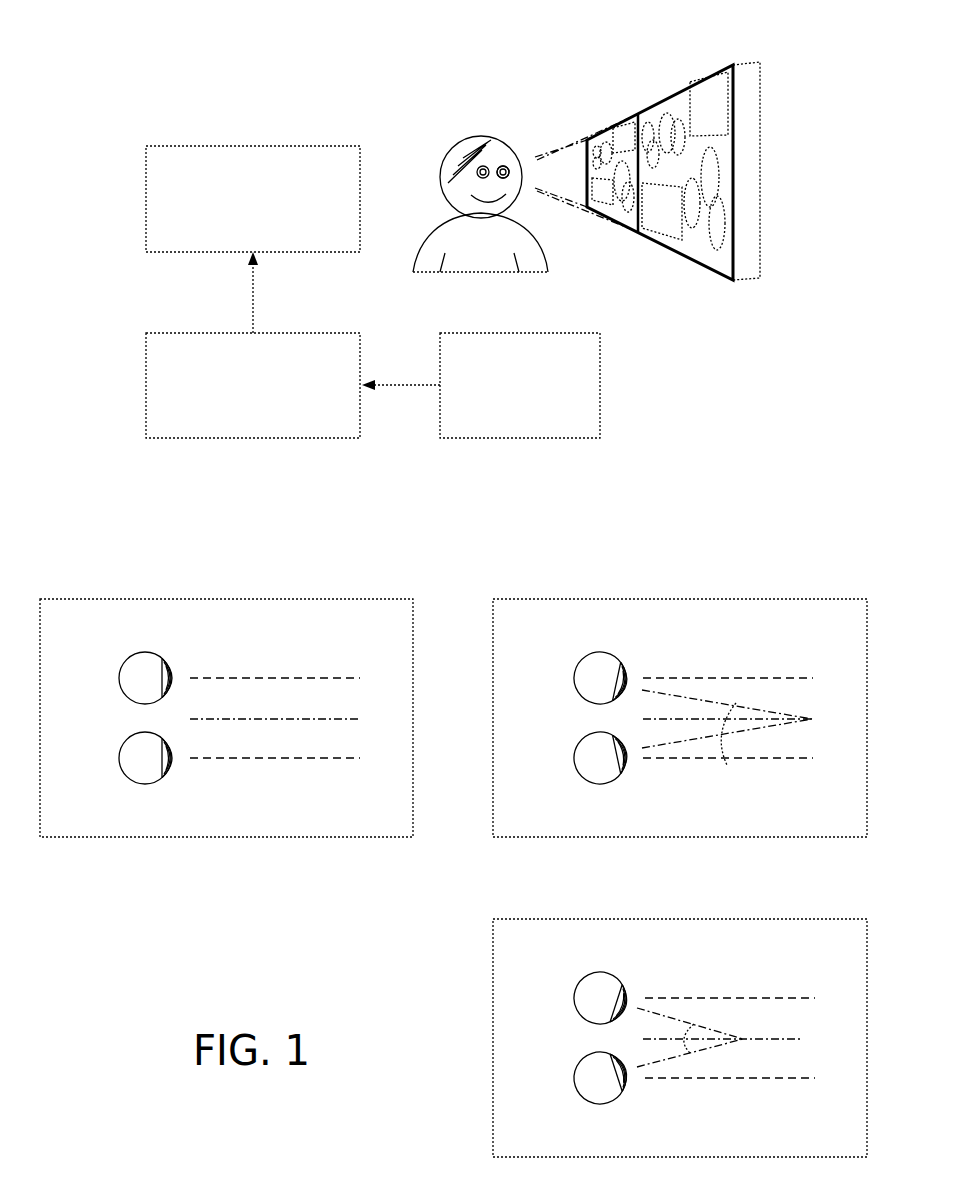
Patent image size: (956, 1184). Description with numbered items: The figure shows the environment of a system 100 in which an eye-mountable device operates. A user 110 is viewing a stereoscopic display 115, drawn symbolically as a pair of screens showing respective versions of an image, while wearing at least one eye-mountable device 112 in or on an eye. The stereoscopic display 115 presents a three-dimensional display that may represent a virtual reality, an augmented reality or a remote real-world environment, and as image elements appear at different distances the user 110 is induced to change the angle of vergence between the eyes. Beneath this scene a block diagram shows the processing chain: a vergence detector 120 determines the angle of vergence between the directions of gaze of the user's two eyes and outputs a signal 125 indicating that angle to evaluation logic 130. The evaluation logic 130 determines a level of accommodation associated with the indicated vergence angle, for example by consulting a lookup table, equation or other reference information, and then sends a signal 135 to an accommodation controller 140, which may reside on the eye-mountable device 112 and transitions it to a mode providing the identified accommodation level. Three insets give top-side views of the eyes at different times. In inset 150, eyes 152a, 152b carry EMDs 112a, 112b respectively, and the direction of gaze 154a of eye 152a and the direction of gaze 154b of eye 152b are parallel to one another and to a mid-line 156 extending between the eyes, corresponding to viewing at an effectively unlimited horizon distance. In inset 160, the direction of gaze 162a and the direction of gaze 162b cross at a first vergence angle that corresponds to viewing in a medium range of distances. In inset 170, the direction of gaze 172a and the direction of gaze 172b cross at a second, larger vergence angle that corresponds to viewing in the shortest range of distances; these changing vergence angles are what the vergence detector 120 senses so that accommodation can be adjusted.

The system 100 is at (250, 82).
The user 110 is at (480, 204).
The eye-mountable device 112 is at (514, 163).
The stereoscopic display 115 is at (723, 280).
The vergence detector 120 is at (520, 385).
The signal 125 is at (401, 375).
The evaluation logic 130 is at (253, 385).
The signal 135 is at (280, 292).
The accommodation controller 140 is at (253, 199).
The inset 150 is at (226, 705).
The eye 152a is at (128, 673).
The eye 152b is at (126, 764).
The EMD 112a is at (195, 667).
The EMD 112b is at (196, 771).
The direction of gaze 154a is at (345, 677).
The direction of gaze 154b is at (345, 760).
The mid-line 156 is at (325, 719).
The inset 160 is at (680, 705).
The direction of gaze 162a is at (673, 694).
The direction of gaze 162b is at (673, 743).
The inset 170 is at (680, 1025).
The direction of gaze 172a is at (708, 1023).
The direction of gaze 172b is at (708, 1052).